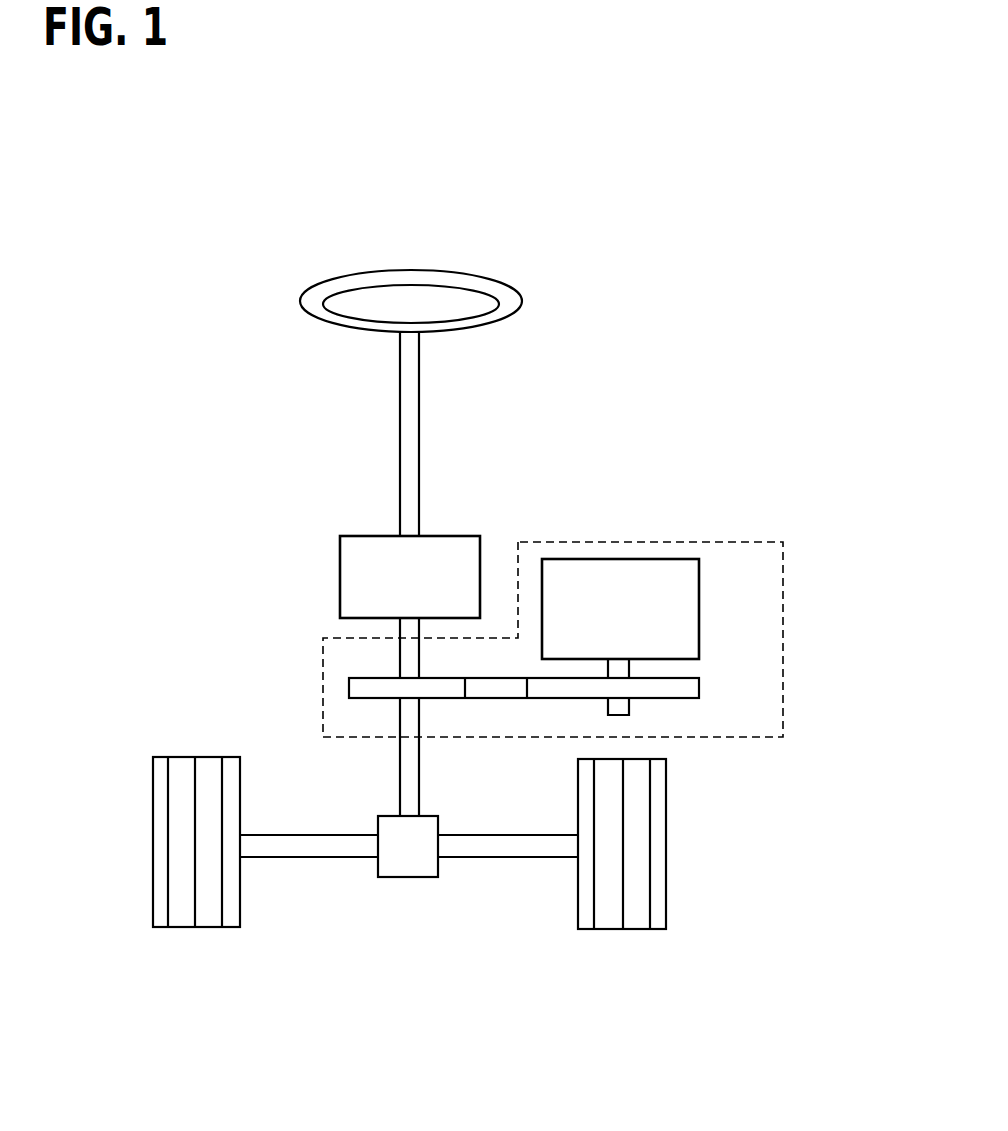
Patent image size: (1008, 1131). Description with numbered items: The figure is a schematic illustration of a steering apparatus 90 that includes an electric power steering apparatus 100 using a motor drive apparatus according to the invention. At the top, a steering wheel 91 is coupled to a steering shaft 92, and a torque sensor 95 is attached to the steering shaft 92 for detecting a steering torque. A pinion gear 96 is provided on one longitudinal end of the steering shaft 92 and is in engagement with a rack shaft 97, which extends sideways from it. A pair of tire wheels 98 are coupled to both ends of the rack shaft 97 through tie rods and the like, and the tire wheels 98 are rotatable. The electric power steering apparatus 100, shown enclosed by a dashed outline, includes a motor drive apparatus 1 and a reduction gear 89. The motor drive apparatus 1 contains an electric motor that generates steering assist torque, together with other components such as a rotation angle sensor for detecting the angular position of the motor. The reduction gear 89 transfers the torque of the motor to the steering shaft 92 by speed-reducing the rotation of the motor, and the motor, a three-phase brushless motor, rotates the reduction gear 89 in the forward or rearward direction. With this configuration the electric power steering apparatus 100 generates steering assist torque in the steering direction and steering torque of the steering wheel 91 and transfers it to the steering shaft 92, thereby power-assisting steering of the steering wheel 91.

The motor drive apparatus 1 is at (700, 581).
The reduction gear 89 is at (700, 683).
The steering apparatus 90 is at (334, 973).
The steering wheel 91 is at (301, 300).
The steering shaft 92 is at (400, 362).
The torque sensor 95 is at (340, 552).
The pinion gear 96 is at (397, 878).
The rack shaft 97 is at (302, 858).
The tire wheels 98 is at (208, 928).
The electric power steering apparatus 100 is at (784, 570).